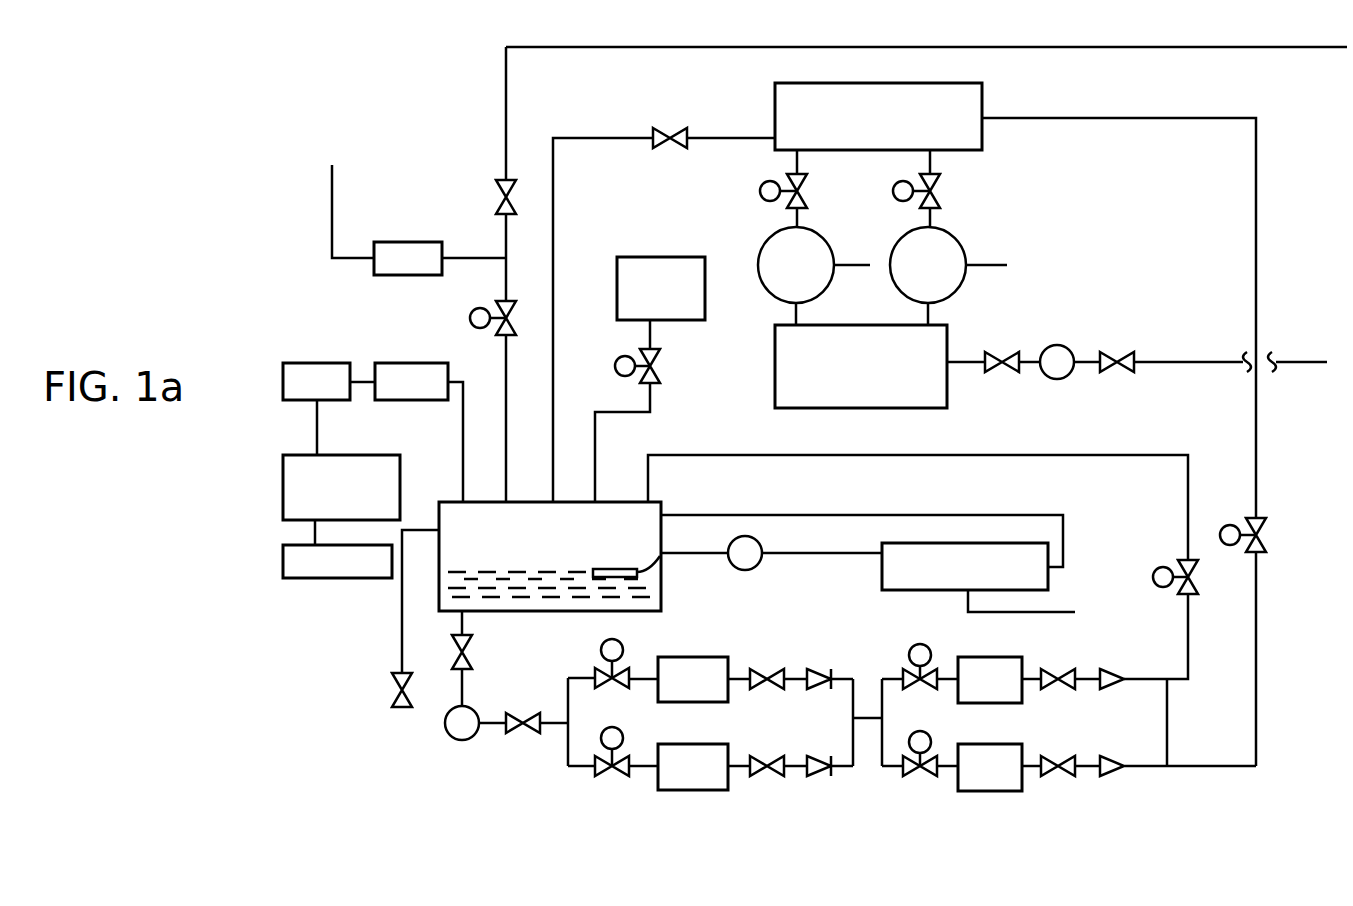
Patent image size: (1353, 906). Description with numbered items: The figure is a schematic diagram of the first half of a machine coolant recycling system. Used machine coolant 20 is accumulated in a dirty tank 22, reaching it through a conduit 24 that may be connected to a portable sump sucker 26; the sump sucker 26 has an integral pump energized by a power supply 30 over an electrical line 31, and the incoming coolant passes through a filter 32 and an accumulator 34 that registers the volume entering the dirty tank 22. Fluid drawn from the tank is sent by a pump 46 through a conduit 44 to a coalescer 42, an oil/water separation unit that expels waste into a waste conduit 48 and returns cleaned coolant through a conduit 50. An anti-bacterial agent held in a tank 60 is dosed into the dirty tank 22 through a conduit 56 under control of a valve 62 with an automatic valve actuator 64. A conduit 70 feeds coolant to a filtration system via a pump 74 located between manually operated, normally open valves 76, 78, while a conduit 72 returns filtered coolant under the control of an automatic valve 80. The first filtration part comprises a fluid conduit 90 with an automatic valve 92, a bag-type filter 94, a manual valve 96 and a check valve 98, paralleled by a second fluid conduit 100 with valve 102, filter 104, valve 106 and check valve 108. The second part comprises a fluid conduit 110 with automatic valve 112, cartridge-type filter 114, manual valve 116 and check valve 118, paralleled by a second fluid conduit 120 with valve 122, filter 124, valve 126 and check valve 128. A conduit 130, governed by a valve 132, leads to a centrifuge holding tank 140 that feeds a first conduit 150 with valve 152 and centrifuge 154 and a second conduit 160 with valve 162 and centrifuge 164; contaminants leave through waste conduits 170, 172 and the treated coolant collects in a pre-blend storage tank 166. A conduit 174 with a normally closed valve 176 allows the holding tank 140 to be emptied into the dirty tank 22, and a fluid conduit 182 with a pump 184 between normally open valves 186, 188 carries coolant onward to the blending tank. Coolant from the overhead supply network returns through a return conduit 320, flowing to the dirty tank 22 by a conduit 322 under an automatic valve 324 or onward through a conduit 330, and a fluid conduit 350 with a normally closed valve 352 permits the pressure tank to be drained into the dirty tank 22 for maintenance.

The used machine coolant 20 is at (548, 598).
The dirty tank 22 is at (661, 578).
The conduit 24 is at (318, 428).
The sump sucker 26 is at (400, 473).
The power supply 30 is at (320, 578).
The electrical line 31 is at (310, 532).
The filter 32 is at (317, 363).
The accumulator 34 is at (412, 363).
The coalescer 42 is at (911, 592).
The conduit 44 is at (800, 556).
The pump 46 is at (763, 545).
The waste conduit 48 is at (1023, 612).
The conduit 50 is at (1063, 530).
The conduit 56 is at (637, 414).
The tank 60 is at (658, 257).
The valve 62 is at (665, 372).
The valve actuator 64 is at (615, 367).
The conduit 70 is at (465, 690).
The conduit 72 is at (1012, 455).
The pump 74 is at (460, 741).
The valve 76 is at (473, 645).
The valve 78 is at (521, 740).
The valve 80 is at (1199, 569).
The fluid conduit 90 is at (735, 682).
The valve 92 is at (599, 681).
The filter 94 is at (693, 657).
The valve 96 is at (768, 666).
The check valve 98 is at (822, 666).
The second fluid conduit 100 is at (735, 769).
The valve 102 is at (605, 776).
The filter 104 is at (683, 791).
The valve 106 is at (768, 753).
The check valve 108 is at (822, 753).
The fluid conduit 110 is at (1028, 682).
The valve 112 is at (912, 690).
The filter 114 is at (972, 656).
The valve 116 is at (1055, 667).
The check valve 118 is at (1118, 671).
The second fluid conduit 120 is at (1028, 770).
The valve 122 is at (915, 778).
The filter 124 is at (985, 792).
The valve 126 is at (1060, 753).
The check valve 128 is at (1116, 758).
The conduit 130 is at (1258, 445).
The valve 132 is at (1268, 540).
The centrifuge holding tank 140 is at (982, 97).
The first conduit 150 is at (792, 218).
The valve 152 is at (808, 182).
The centrifuge 154 is at (826, 292).
The second conduit 160 is at (935, 220).
The valve 162 is at (941, 182).
The centrifuge 164 is at (962, 282).
The pre-blend storage tank 166 is at (872, 409).
The waste conduit 170 is at (846, 262).
The waste conduit 172 is at (985, 262).
The conduit 174 is at (581, 138).
The valve 176 is at (676, 130).
The fluid conduit 182 is at (1192, 362).
The pump 184 is at (1058, 345).
The valve 186 is at (993, 352).
The valve 188 is at (1117, 372).
The return conduit 320 is at (333, 203).
The conduit 322 is at (506, 410).
The automatic valve 324 is at (497, 337).
The conduit 330 is at (588, 47).
The fluid conduit 350 is at (400, 622).
The valve 352 is at (395, 697).